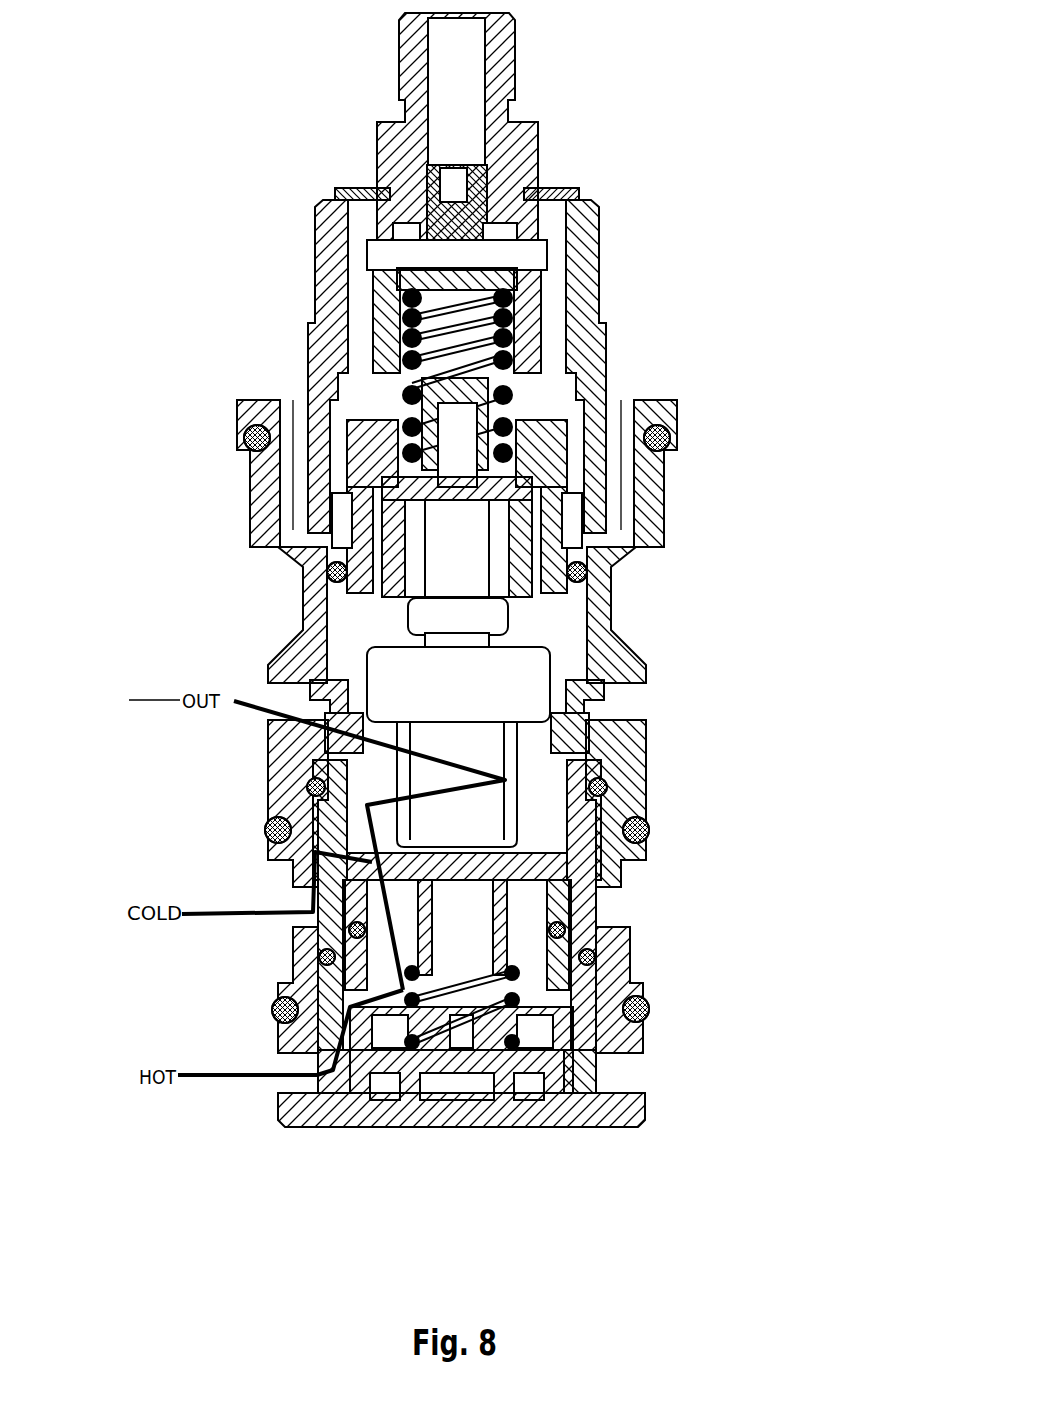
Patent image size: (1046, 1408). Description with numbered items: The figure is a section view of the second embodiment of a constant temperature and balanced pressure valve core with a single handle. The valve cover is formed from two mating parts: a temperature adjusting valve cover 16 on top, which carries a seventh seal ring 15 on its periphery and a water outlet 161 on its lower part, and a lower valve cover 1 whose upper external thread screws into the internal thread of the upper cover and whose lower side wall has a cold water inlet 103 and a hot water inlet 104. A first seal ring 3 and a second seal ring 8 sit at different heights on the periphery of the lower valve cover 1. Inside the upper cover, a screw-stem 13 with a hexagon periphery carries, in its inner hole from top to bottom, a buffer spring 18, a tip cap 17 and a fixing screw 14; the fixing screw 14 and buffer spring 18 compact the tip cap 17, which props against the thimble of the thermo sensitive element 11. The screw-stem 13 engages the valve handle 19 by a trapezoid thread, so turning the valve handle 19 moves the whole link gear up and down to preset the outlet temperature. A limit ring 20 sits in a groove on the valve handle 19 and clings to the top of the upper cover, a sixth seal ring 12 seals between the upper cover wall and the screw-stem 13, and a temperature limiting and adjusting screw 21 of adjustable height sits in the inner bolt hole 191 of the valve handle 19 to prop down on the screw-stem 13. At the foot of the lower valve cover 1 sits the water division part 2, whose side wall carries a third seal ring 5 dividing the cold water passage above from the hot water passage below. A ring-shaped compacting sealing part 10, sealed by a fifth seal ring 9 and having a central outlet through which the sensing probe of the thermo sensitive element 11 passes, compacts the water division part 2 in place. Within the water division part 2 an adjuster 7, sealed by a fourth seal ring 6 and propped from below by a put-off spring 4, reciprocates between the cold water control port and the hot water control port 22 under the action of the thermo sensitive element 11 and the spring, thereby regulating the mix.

The lower valve cover 1 is at (643, 1113).
The water division part 2 is at (580, 1082).
The first seal ring 3 is at (269, 1009).
The put-off spring 4 is at (528, 975).
The third seal ring 5 is at (605, 953).
The fourth seal ring 6 is at (575, 927).
The adjuster 7 is at (622, 887).
The second seal ring 8 is at (257, 833).
The fifth seal ring 9 is at (610, 783).
The compacting sealing part 10 is at (593, 763).
The thermo sensitive element 11 is at (563, 662).
The sixth seal ring 12 is at (588, 578).
The screw-stem 13 is at (572, 542).
The fixing screw 14 is at (528, 485).
The seventh seal ring 15 is at (670, 434).
The temperature adjusting valve cover 16 is at (682, 402).
The tip cap 17 is at (507, 380).
The buffer spring 18 is at (512, 312).
The valve handle 19 is at (565, 242).
The limit ring 20 is at (583, 188).
The temperature limiting and adjusting screw 21 is at (492, 173).
The hot water control port 22 is at (518, 998).
The cold water inlet 103 is at (617, 905).
The hot water inlet 104 is at (623, 1070).
The water outlet 161 is at (287, 703).
The inner bolt hole 191 is at (465, 127).